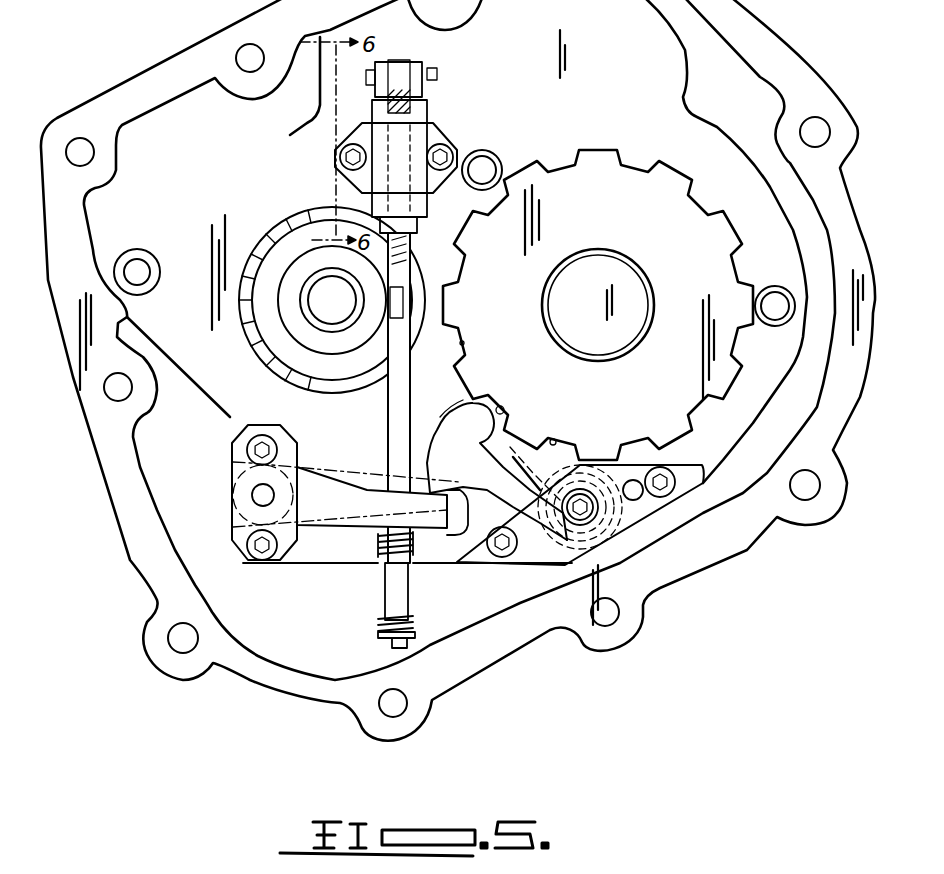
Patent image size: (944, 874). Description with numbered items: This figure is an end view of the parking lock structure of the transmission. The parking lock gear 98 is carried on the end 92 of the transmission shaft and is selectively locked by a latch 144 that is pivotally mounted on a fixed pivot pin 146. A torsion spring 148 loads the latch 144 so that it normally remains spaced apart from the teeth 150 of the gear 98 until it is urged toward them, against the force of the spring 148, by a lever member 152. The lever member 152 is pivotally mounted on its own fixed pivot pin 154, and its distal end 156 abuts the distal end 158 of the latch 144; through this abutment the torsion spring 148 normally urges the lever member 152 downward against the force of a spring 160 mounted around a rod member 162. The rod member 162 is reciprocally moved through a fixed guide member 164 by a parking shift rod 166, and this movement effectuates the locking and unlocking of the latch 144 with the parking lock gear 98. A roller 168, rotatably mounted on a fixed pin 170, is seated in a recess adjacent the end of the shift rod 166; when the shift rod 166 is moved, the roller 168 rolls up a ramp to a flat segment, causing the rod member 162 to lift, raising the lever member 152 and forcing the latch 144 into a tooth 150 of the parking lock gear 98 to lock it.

The end of the shaft 92 is at (608, 268).
The parking lock gear 98 is at (603, 150).
The latch 144 is at (500, 407).
The fixed pivot pin 146 is at (582, 500).
The torsion spring 148 is at (507, 466).
The teeth 150 is at (462, 343).
The lever member 152 is at (327, 475).
The fixed pivot pin 154 is at (252, 495).
The distal end 156 is at (478, 565).
The distal end 158 is at (447, 512).
The spring 160 is at (380, 550).
The rod member 162 is at (388, 405).
The fixed guide member 164 is at (450, 140).
The parking shift rod 166 is at (430, 112).
The roller 168 is at (410, 58).
The fixed pin 170 is at (437, 74).